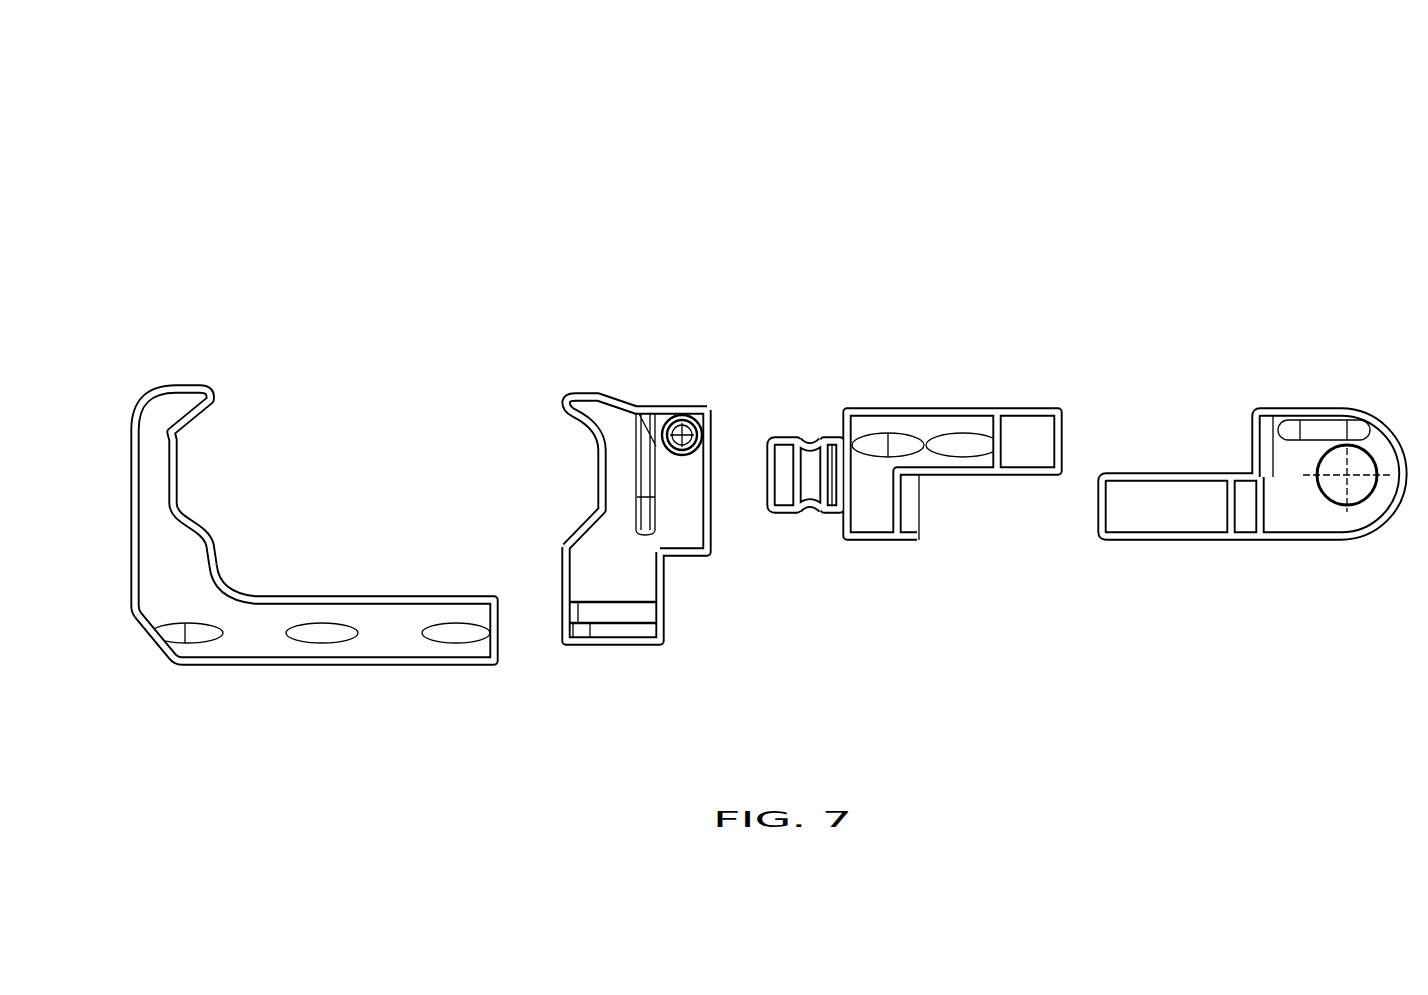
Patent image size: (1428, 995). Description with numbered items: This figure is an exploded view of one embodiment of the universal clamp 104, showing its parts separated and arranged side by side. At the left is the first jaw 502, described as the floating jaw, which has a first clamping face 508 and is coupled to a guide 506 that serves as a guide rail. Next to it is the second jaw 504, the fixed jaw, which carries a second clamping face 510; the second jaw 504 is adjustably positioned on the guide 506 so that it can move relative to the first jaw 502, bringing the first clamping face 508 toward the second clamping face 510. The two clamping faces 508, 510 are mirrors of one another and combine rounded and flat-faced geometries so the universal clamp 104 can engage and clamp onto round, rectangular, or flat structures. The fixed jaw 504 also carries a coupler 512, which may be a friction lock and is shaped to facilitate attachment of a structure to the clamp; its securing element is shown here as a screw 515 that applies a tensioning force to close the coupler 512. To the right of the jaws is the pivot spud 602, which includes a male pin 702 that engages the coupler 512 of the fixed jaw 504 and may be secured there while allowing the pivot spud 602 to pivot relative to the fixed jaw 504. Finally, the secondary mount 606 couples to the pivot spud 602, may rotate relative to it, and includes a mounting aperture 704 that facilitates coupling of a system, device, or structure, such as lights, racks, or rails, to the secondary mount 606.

The universal clamp 104 is at (238, 122).
The first jaw 502 is at (207, 375).
The second jaw 504 is at (573, 387).
The guide 506 is at (502, 658).
The first clamping face 508 is at (182, 470).
The second clamping face 510 is at (600, 480).
The coupler 512 is at (670, 407).
The screw 515 is at (712, 465).
The pivot spud 602 is at (938, 407).
The secondary mount 606 is at (1303, 405).
The male pin 702 is at (787, 432).
The mounting aperture 704 is at (1337, 505).